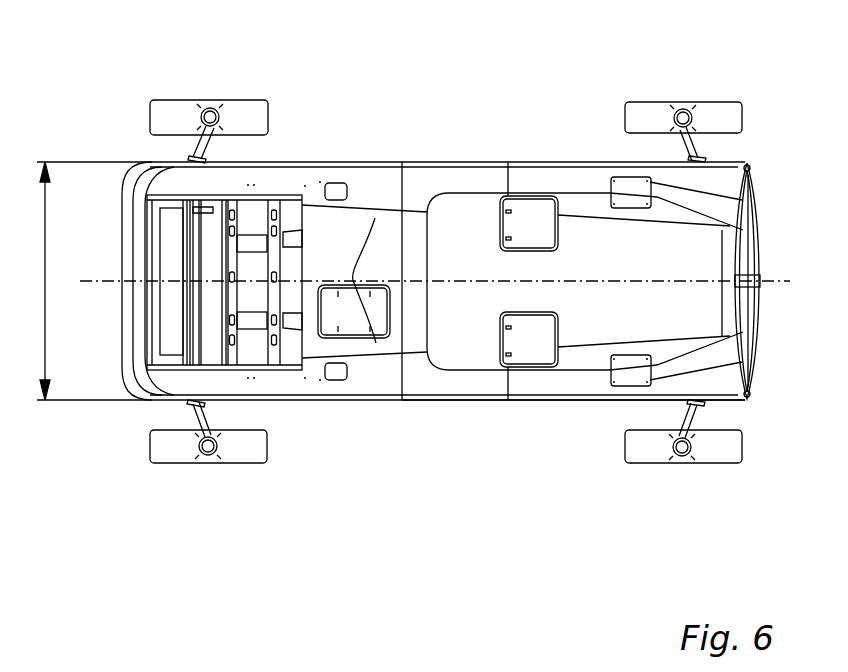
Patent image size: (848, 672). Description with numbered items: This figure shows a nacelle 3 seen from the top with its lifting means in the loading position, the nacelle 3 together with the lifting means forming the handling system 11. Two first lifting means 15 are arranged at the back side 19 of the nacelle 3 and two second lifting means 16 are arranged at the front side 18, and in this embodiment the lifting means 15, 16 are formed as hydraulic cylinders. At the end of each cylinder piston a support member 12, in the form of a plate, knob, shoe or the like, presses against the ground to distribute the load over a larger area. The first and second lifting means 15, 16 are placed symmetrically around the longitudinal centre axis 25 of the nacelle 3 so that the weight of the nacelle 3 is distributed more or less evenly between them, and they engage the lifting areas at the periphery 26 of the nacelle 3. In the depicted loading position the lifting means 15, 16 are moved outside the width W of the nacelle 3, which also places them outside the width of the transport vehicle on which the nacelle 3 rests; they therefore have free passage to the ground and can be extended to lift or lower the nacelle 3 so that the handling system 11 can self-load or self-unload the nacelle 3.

The handling system 11 is at (186, 79).
The nacelle 3 is at (570, 178).
The support member 12 is at (727, 117).
The first lifting means 15 is at (214, 110).
The second lifting means 16 is at (685, 110).
The front side 18 is at (761, 234).
The back side 19 is at (118, 250).
The longitudinal centre axis 25 is at (785, 283).
The periphery 26 is at (402, 401).
The width W is at (36, 281).